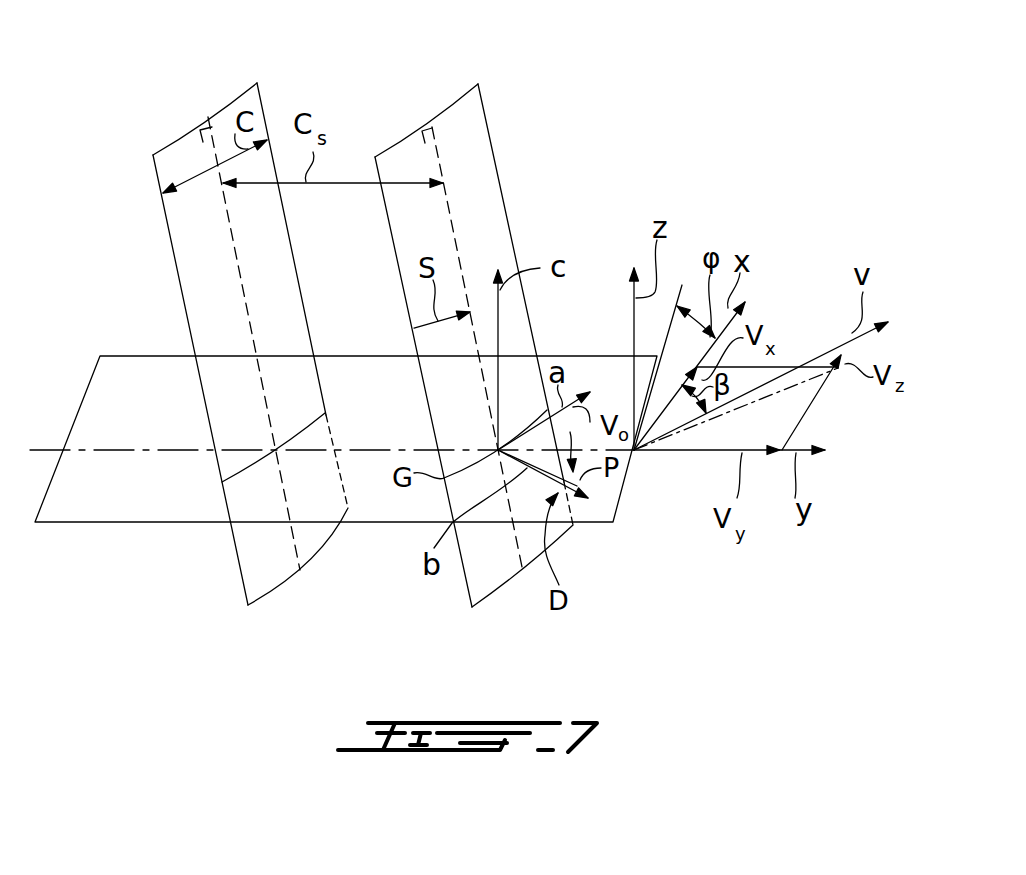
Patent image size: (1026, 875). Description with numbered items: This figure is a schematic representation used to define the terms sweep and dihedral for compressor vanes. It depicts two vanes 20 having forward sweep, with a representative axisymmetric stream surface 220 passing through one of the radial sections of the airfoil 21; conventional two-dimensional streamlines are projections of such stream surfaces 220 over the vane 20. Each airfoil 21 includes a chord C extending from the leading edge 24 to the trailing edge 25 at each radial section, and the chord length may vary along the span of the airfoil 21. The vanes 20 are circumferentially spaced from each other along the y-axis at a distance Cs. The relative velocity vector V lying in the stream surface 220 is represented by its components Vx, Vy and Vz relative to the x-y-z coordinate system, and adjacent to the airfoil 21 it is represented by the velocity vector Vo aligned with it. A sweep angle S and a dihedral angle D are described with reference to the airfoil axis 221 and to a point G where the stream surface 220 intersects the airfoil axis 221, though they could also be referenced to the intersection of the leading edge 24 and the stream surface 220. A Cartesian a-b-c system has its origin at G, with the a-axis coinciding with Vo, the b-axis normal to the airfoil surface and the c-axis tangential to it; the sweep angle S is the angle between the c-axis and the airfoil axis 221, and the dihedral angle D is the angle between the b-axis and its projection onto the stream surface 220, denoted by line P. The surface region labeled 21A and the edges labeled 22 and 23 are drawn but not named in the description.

The vane 20 is at (327, 330).
The airfoil 21 is at (466, 349).
The blade face 21A is at (472, 127).
The adjacent blade 22 is at (316, 562).
The blade tip edge 23 is at (222, 108).
The leading edge 24 is at (170, 244).
The trailing edge 25 is at (301, 247).
The axisymmetric stream surface 220 is at (100, 524).
The airfoil axis 221 is at (240, 286).